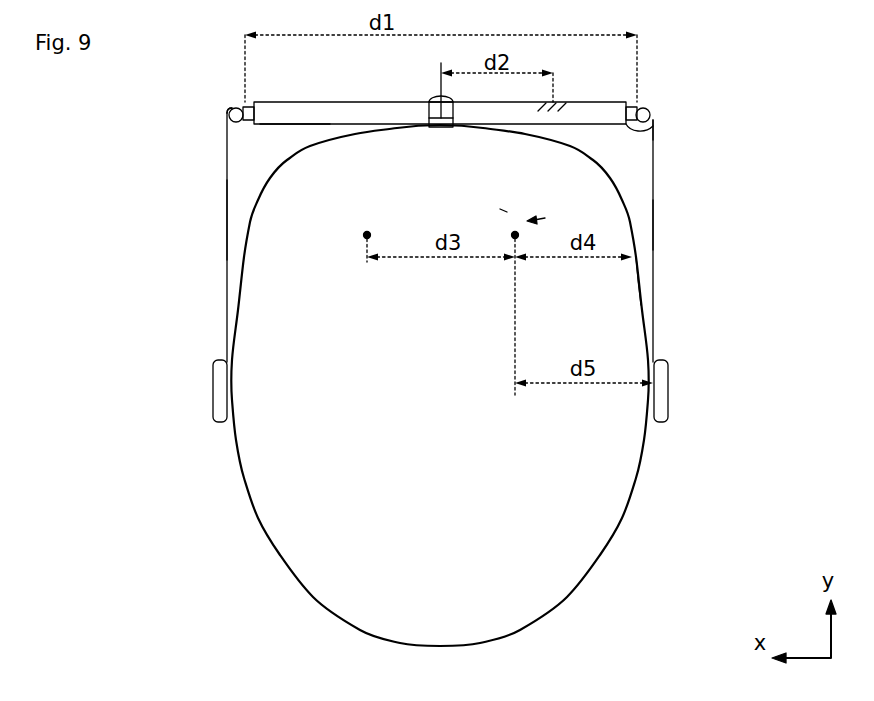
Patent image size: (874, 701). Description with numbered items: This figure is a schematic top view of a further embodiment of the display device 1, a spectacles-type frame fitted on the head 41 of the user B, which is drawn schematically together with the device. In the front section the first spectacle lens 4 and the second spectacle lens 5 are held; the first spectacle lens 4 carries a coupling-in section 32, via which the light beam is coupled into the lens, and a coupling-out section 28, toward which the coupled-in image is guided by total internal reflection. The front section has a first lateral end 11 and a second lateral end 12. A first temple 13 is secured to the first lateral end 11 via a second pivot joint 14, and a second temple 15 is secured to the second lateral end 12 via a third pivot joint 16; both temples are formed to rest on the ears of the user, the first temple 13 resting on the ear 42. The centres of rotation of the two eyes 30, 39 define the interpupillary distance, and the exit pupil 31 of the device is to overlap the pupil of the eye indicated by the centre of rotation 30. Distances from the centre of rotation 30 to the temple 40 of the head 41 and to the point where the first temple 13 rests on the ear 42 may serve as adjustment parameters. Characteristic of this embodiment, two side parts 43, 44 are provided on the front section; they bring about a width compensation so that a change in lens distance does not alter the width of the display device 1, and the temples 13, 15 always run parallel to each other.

The display device 1 is at (662, 170).
The first spectacle lens 4 is at (567, 125).
The second spectacle lens 5 is at (307, 125).
The first lateral end 11 is at (643, 108).
The second lateral end 12 is at (242, 107).
The first temple 13 is at (654, 227).
The second pivot joint 14 is at (652, 110).
The second temple 15 is at (227, 221).
The third pivot joint 16 is at (228, 107).
The coupling-out section 28 is at (556, 101).
The centre of rotation of the eye 30 is at (518, 236).
The exit pupil 31 is at (500, 211).
The coupling-in section 32 is at (655, 134).
The centre of rotation 39 is at (364, 236).
The temple of the head 40 is at (637, 254).
The head 41 is at (648, 468).
The ear 42 is at (668, 377).
The side part 43 is at (631, 107).
The side part 44 is at (246, 106).
The user B is at (262, 543).